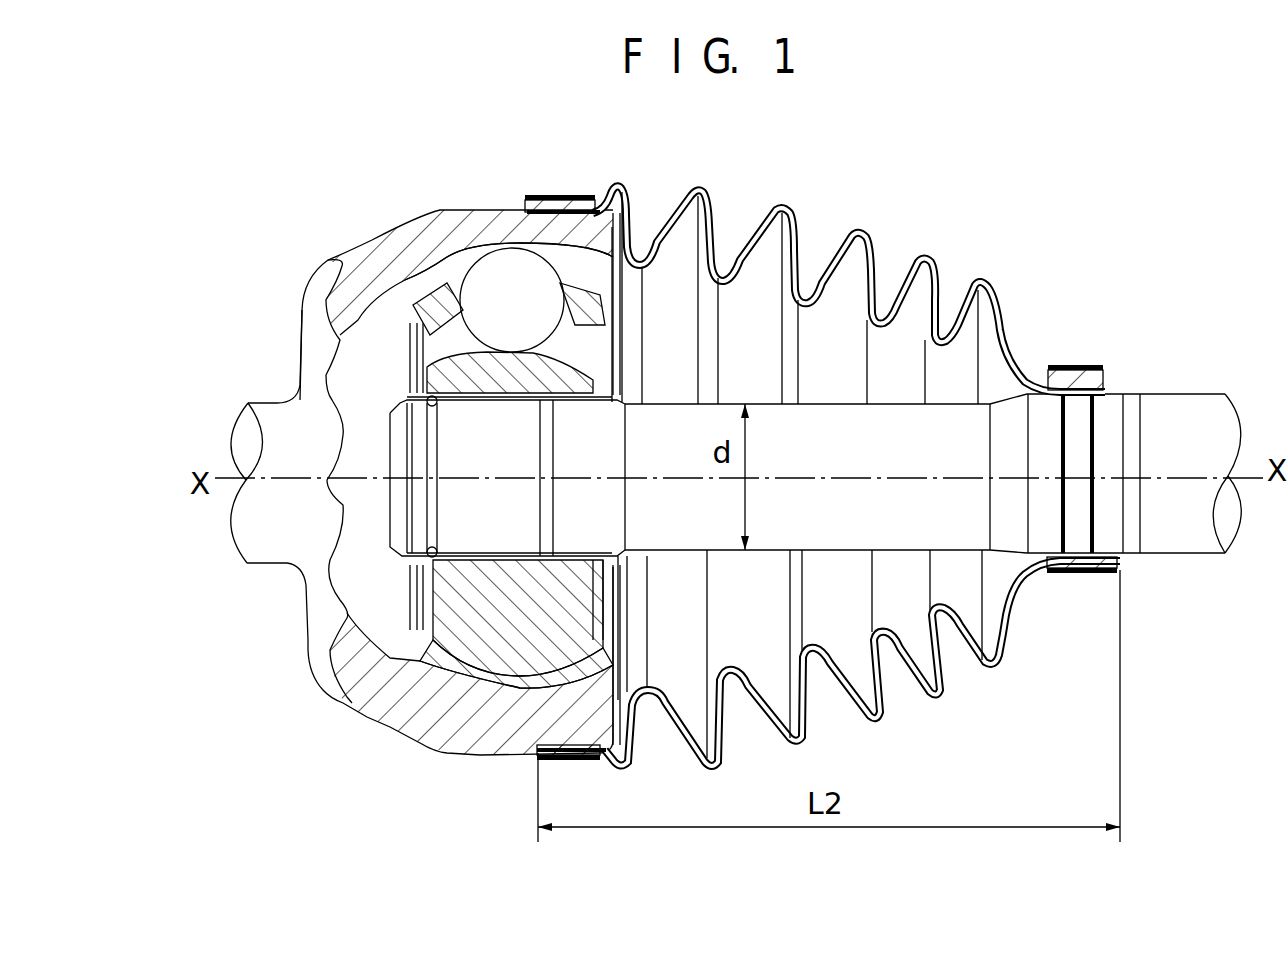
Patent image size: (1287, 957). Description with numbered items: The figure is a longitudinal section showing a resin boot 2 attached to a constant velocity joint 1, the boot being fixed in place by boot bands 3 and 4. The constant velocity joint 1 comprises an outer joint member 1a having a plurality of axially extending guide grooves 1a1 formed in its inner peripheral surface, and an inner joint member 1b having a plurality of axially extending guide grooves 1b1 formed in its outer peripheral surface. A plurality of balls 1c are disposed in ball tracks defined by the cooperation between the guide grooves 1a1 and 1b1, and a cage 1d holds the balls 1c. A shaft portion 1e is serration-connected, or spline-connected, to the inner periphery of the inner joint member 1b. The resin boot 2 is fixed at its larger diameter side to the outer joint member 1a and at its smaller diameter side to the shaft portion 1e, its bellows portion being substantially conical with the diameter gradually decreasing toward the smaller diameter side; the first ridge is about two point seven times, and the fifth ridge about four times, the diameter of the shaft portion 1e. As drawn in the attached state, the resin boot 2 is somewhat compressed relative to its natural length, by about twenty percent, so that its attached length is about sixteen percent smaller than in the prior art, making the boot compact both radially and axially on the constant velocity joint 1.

The constant velocity joint 1 is at (357, 232).
The outer joint member 1a is at (315, 283).
The guide grooves 1a1 is at (437, 273).
The inner joint member 1b is at (450, 378).
The guide grooves 1b1 is at (455, 375).
The balls 1c is at (515, 260).
The cage 1d is at (483, 257).
The shaft portion 1e is at (1175, 405).
The resin boot 2 is at (920, 218).
The boot band 3 is at (547, 190).
The boot band 4 is at (1097, 357).